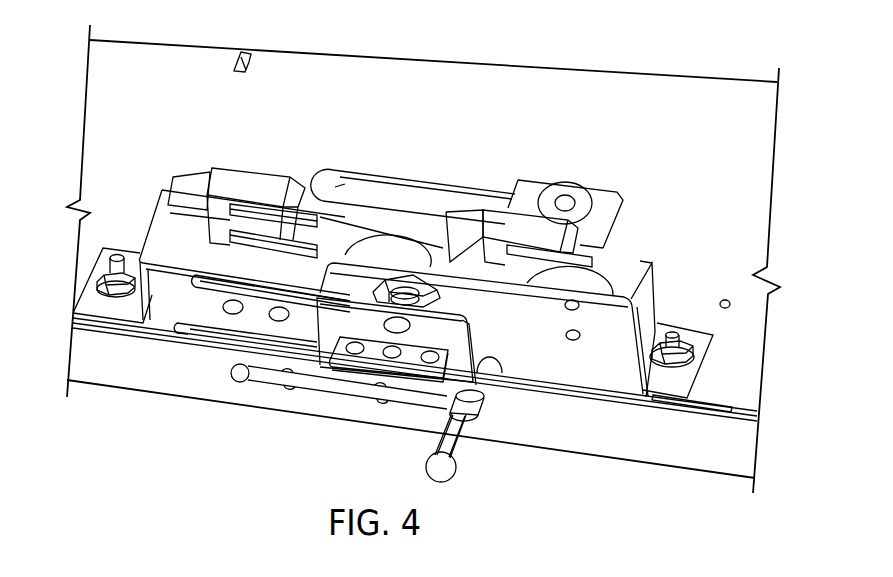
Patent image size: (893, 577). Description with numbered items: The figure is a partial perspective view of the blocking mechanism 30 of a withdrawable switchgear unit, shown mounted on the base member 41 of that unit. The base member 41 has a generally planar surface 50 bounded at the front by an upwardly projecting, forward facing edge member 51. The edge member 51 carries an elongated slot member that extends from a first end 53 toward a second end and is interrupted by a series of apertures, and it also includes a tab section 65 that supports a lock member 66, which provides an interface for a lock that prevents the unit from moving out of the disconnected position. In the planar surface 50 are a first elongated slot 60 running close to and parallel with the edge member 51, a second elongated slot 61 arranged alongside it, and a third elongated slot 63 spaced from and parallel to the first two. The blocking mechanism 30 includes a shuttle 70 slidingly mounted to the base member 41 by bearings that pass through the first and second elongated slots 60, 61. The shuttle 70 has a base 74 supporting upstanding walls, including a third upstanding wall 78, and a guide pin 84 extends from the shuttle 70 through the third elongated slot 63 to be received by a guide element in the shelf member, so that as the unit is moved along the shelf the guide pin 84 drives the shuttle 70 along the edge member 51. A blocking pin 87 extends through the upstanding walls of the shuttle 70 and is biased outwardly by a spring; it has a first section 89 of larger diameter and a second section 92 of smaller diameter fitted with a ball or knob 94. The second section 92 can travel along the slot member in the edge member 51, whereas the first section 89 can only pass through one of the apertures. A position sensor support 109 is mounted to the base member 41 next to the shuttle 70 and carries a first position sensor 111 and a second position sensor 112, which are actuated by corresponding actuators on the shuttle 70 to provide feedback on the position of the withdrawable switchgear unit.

The blocking mechanism 30 is at (708, 281).
The base member 41 is at (118, 137).
The planar surface 50 is at (217, 137).
The edge member 51 is at (122, 365).
The first end 53 is at (243, 382).
The first elongated slot 60 is at (215, 287).
The second elongated slot 61 is at (190, 322).
The third elongated slot 63 is at (386, 186).
The tab section 65 is at (460, 340).
The lock member 66 is at (333, 367).
The shuttle 70 is at (607, 350).
The base 74 is at (598, 226).
The third upstanding wall 78 is at (545, 340).
The guide pin 84 is at (566, 200).
The blocking pin 87 is at (432, 444).
The first section 89 is at (478, 400).
The second section 92 is at (456, 445).
The ball or knob 94 is at (448, 472).
The position sensor support 109 is at (362, 234).
The first position sensor 111 is at (213, 230).
The second position sensor 112 is at (600, 263).